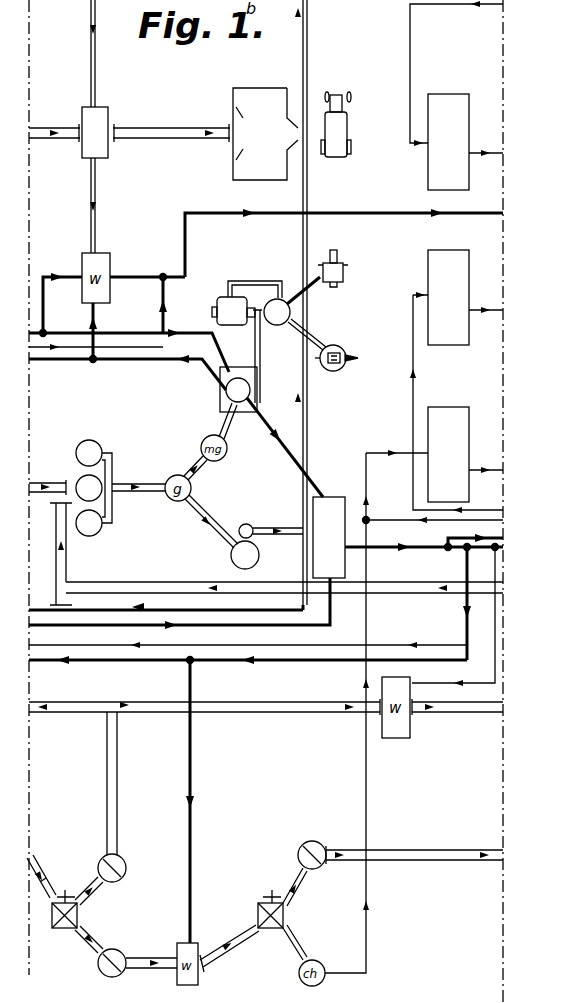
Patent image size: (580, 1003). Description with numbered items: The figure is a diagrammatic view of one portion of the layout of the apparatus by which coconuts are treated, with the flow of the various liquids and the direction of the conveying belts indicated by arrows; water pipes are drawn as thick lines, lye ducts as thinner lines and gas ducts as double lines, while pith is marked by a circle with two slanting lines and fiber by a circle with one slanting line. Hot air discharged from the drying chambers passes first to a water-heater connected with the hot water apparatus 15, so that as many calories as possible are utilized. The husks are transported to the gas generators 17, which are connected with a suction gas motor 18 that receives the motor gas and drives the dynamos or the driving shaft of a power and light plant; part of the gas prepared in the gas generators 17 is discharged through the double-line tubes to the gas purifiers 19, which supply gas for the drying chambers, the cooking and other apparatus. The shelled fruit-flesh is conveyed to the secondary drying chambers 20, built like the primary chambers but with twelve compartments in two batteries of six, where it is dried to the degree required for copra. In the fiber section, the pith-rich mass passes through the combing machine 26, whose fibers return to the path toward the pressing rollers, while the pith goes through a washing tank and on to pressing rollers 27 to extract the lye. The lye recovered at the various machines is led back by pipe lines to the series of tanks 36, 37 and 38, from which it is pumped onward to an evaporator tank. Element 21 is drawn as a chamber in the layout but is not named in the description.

The hot water apparatus 15 is at (334, 515).
The gas generators 17 is at (80, 486).
The suction gas motor 18 is at (252, 367).
The gas purifiers 19 is at (242, 527).
The secondary drying chambers 20 is at (103, 124).
The combustion chamber 21 is at (265, 134).
The combing machine 26 is at (67, 894).
The pressing rollers 27 is at (272, 895).
The tank 36 is at (448, 454).
The tank 37 is at (448, 297).
The tank 38 is at (448, 142).